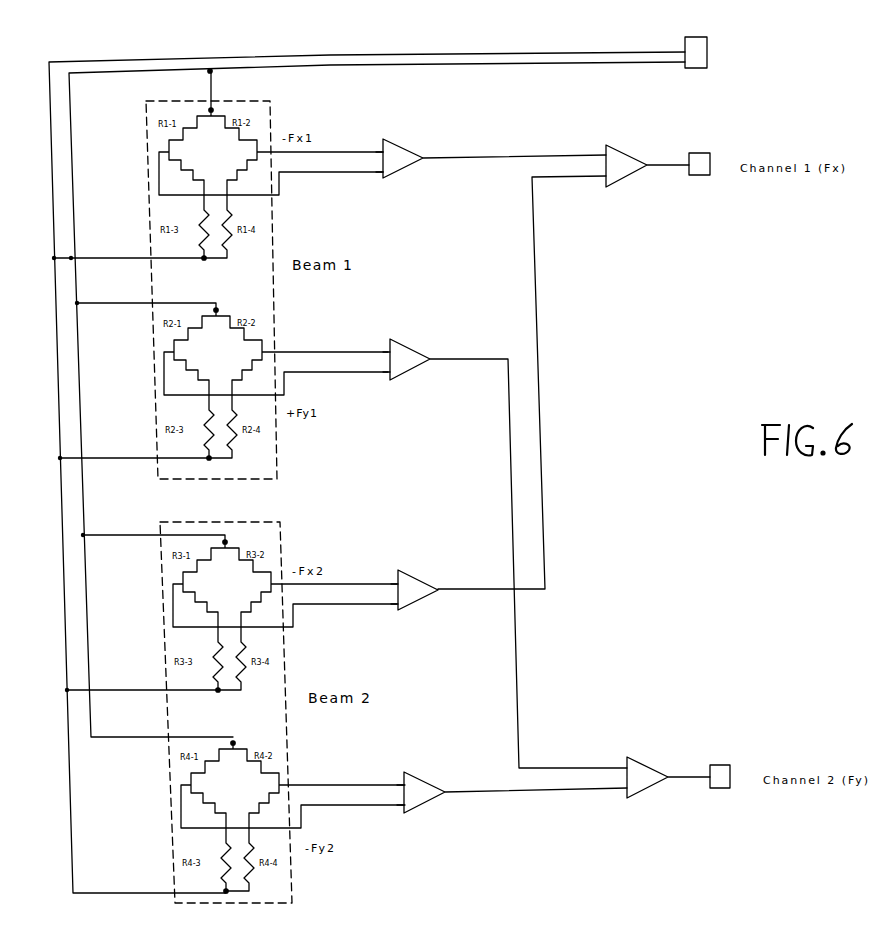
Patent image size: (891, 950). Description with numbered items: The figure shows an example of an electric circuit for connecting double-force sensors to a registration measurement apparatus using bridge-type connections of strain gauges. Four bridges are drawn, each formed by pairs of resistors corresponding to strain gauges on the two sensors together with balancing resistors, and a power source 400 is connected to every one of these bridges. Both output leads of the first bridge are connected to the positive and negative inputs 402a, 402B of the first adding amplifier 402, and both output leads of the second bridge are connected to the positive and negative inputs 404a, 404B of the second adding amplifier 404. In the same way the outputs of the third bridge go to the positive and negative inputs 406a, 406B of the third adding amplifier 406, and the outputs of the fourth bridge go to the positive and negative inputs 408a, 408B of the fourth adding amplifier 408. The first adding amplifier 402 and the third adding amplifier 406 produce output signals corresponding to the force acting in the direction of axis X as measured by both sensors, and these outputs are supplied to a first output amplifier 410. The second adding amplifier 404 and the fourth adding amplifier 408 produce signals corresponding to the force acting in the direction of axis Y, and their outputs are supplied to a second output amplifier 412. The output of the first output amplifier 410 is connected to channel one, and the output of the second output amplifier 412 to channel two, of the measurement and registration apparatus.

The power source 400 is at (707, 46).
The first adding amplifier 402 is at (419, 175).
The positive input of the first adding amplifier 402a is at (383, 141).
The negative input of the first adding amplifier 402B is at (383, 178).
The second adding amplifier 404 is at (425, 341).
The positive input of the second adding amplifier 404a is at (393, 340).
The negative input of the second adding amplifier 404B is at (400, 380).
The third adding amplifier 406 is at (428, 571).
The positive input of the third adding amplifier 406a is at (400, 570).
The negative input of the third adding amplifier 406B is at (404, 610).
The fourth adding amplifier 408 is at (438, 795).
The positive input of the fourth adding amplifier 408a is at (410, 772).
The negative input of the fourth adding amplifier 408B is at (413, 813).
The first output amplifier 410 is at (627, 150).
The second output amplifier 412 is at (643, 758).